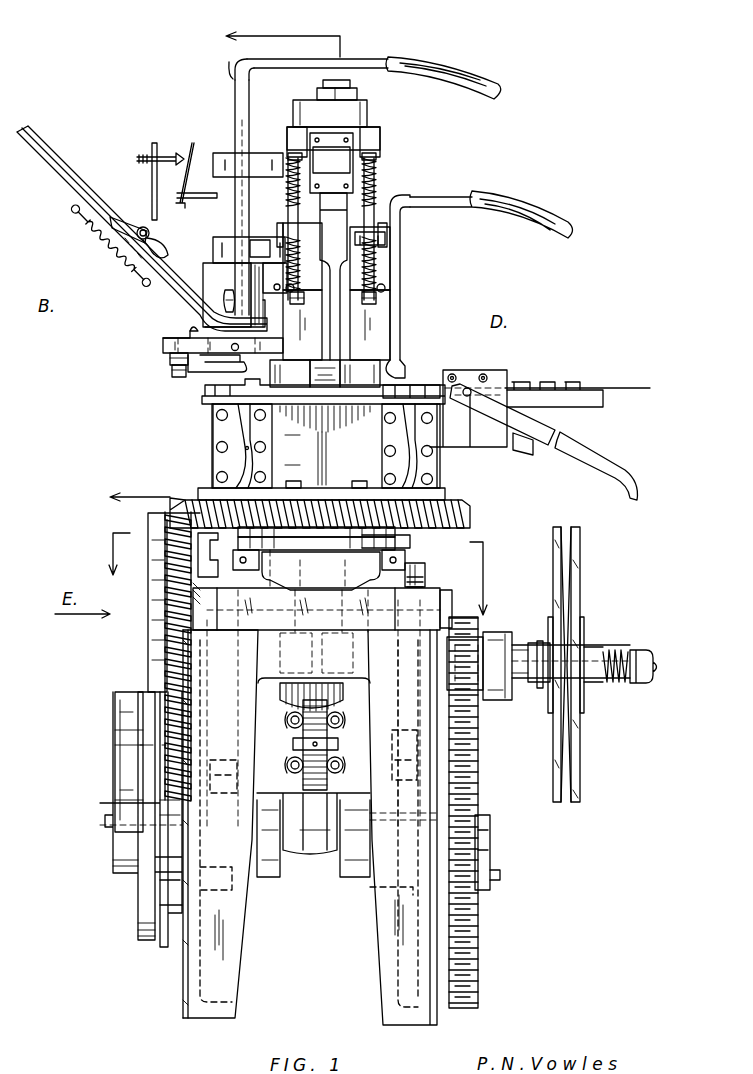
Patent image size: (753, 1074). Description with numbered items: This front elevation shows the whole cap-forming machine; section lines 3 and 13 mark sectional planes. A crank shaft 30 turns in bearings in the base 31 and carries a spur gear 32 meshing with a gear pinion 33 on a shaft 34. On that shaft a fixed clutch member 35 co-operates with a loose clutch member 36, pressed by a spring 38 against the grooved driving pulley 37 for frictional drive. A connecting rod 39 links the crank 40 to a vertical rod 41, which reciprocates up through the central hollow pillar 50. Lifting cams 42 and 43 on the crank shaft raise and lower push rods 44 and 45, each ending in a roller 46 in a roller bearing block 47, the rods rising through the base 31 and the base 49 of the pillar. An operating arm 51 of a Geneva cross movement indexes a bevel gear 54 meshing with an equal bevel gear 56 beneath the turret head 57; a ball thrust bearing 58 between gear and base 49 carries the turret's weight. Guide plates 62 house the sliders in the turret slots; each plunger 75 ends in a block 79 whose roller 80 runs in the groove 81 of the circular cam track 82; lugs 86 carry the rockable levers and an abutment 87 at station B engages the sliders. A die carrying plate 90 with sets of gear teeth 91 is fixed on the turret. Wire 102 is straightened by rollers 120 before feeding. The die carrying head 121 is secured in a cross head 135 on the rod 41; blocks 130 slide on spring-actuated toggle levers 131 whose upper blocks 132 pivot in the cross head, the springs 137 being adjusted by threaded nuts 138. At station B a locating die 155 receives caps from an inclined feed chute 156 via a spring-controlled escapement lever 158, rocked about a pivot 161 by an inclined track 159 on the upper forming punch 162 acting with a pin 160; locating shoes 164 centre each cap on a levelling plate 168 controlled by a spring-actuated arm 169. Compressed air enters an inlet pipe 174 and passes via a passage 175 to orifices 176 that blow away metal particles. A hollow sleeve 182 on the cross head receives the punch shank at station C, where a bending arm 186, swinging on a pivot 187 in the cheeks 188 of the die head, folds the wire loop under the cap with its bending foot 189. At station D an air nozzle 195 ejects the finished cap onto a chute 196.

The section line 3- 3 is at (225, 256).
The section line 13- 13 is at (300, 561).
The crank shaft 30 is at (164, 935).
The base 31 is at (230, 945).
The spur gear 32 is at (463, 970).
The gear pinion 33 is at (465, 622).
The rotatable shaft 34 is at (507, 640).
The clutch member 35 is at (550, 700).
The loose clutch member 36 is at (583, 705).
The grooved driving pulley 37 is at (582, 742).
The spring 38 is at (615, 685).
The connecting rod 39 is at (298, 760).
The crank 40 is at (275, 852).
The vertical reciprocable rod 41 is at (342, 617).
The lifting cam 42 is at (232, 888).
The lifting cam 43 is at (395, 890).
The push rod 44 is at (207, 667).
The push rod 45 is at (422, 637).
The roller 46 is at (470, 778).
The roller bearing block 47 is at (432, 752).
The base of central hollow pillar 49 is at (200, 596).
The central hollow pillar 50 is at (352, 370).
The operating arm 51 is at (125, 742).
The bevel gear 54 is at (168, 555).
The bevel gear 56 is at (200, 500).
The turret head 57 is at (382, 393).
The ball thrust bearing 58 is at (400, 545).
The guide plates 62 is at (216, 452).
The movable plunger 75 is at (383, 542).
The rectangular block 79 is at (393, 560).
The rotatable roller 80 is at (243, 556).
The groove 81 is at (406, 566).
The cam track 82 is at (425, 579).
The lugs 86 is at (400, 470).
The abutment 87 is at (203, 533).
The die carrying plate 90 is at (215, 393).
The gear teeth 91 is at (235, 405).
The wire 102 is at (605, 390).
The rollers 120 is at (485, 375).
The die carrying head 121 is at (362, 322).
The blocks 130 is at (395, 237).
The toggle levers 131 is at (370, 300).
The blocks 132 is at (378, 143).
The cross head 135 is at (302, 117).
The springs 137 is at (382, 273).
The threaded nuts 138 is at (378, 290).
The locating die 155 is at (165, 346).
The inclined feed chute 156 is at (70, 178).
The escapement lever 158 is at (128, 218).
The inclined track 159 is at (190, 147).
The pin 160 is at (162, 158).
The pivot 161 is at (150, 236).
The upper forming punch 162 is at (232, 212).
The locating shoes 164 is at (190, 332).
The levelling plate 168 is at (235, 370).
The spring actuated arm 169 is at (172, 370).
The inlet pipe 174 is at (348, 59).
The passage 175 is at (240, 182).
The orifices 176 is at (225, 303).
The hollow sleeve 182 is at (402, 215).
The bending arm 186 is at (372, 262).
The pivot 187 is at (290, 216).
The cheeks 188 is at (240, 315).
The bending foot 189 is at (322, 378).
The air nozzle 195 is at (392, 372).
The chute 196 is at (575, 447).